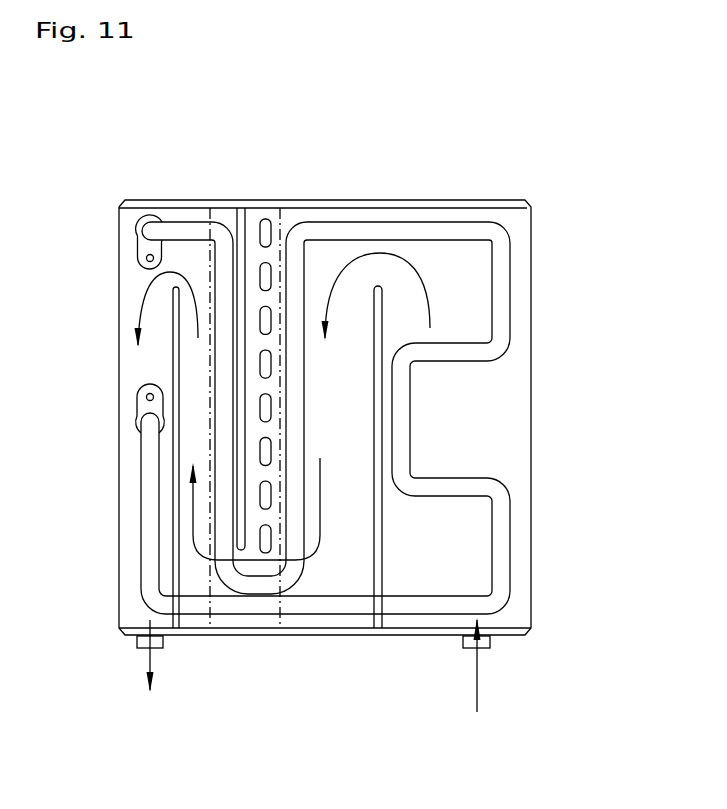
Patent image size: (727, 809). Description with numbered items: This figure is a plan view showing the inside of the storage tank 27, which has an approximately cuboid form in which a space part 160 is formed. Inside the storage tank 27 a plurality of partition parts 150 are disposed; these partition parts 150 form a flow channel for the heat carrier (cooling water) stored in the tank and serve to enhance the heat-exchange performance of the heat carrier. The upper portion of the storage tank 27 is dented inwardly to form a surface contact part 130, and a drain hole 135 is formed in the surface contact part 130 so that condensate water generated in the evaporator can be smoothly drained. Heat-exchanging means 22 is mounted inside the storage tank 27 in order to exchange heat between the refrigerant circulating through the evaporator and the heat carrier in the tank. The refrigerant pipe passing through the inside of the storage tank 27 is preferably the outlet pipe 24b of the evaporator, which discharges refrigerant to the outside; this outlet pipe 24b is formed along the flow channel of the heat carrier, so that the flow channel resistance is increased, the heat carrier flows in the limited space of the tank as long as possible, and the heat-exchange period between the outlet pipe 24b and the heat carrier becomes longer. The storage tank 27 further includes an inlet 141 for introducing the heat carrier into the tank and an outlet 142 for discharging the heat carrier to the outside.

The storage tank 27 is at (469, 192).
The heat-exchanging means 22 is at (405, 418).
The outlet pipe 24b is at (500, 298).
The surface contact part 130 is at (268, 364).
The drain hole 135 is at (268, 277).
The partition parts 150 is at (373, 545).
The space part 160 is at (433, 412).
The inlet 141 is at (490, 642).
The outlet 142 is at (135, 641).